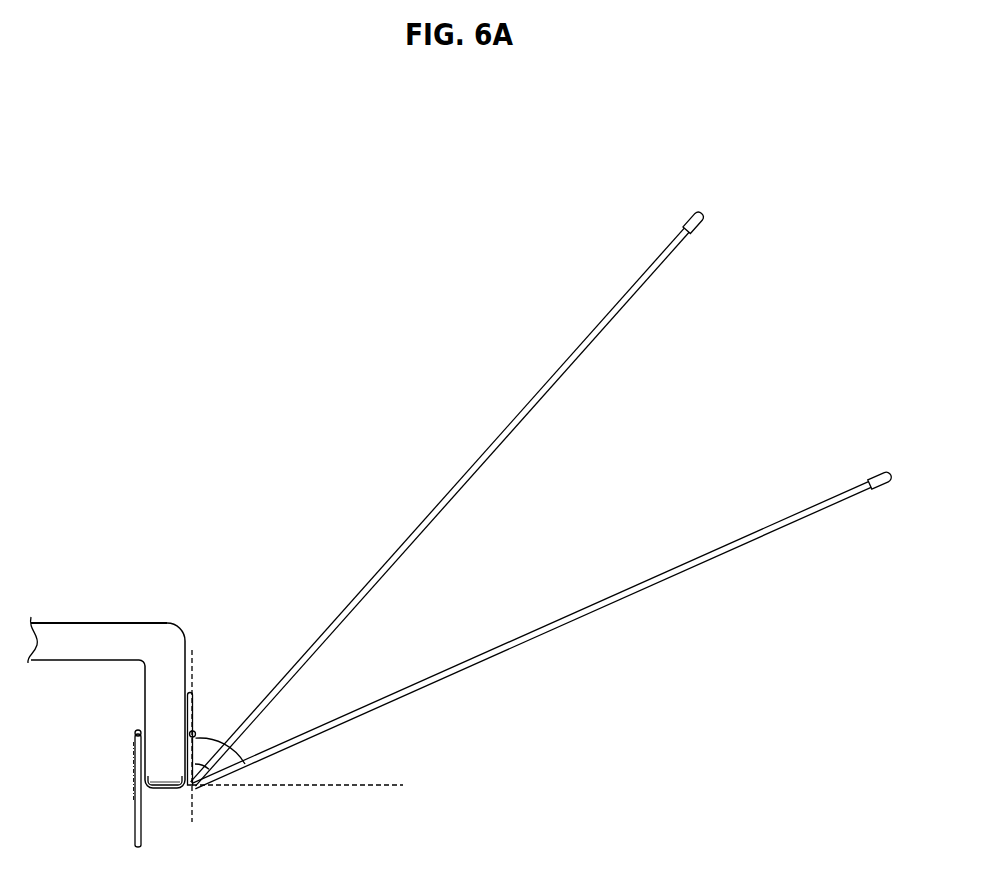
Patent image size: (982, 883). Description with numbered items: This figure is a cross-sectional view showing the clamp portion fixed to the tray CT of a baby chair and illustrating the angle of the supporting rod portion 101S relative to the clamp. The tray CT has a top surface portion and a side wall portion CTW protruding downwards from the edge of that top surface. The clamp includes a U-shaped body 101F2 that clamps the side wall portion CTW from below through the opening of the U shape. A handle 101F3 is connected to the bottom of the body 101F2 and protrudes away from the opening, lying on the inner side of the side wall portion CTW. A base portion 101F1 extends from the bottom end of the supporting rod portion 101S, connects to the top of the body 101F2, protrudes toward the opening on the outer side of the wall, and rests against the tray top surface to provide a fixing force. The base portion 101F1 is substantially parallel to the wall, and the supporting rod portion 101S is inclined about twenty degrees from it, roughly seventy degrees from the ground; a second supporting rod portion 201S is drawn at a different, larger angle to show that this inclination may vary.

The tray CT is at (49, 675).
The side wall portion CTW is at (152, 701).
The base portion 101F1 is at (190, 700).
The body 101F2 is at (162, 790).
The handle 101F3 is at (135, 805).
The supporting rod portion 101S is at (426, 538).
The supporting rod portion of the net supporting part 201S is at (488, 663).